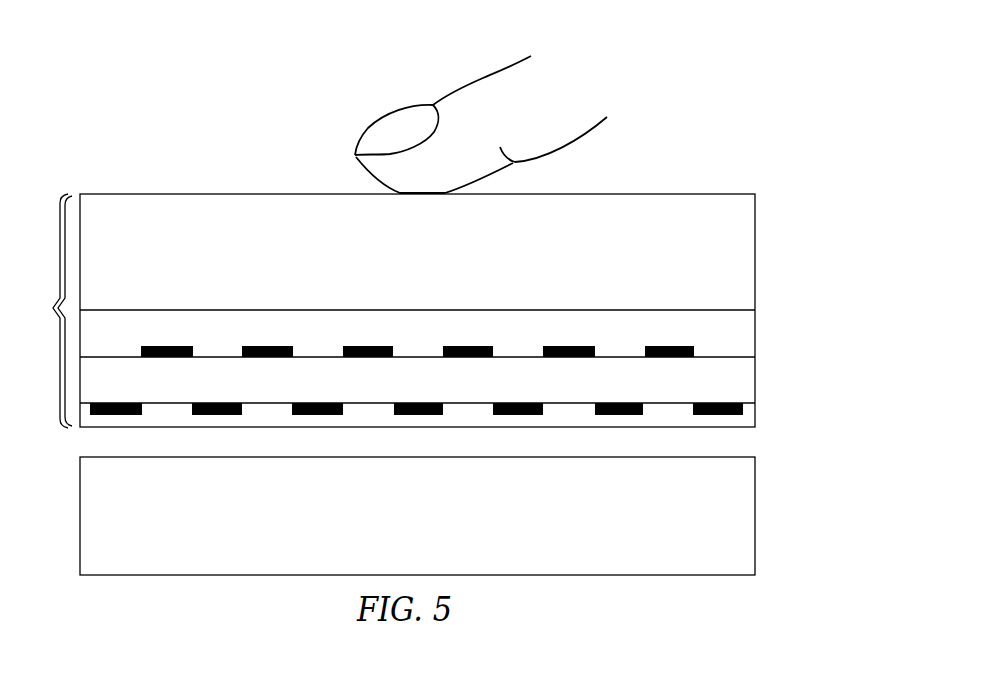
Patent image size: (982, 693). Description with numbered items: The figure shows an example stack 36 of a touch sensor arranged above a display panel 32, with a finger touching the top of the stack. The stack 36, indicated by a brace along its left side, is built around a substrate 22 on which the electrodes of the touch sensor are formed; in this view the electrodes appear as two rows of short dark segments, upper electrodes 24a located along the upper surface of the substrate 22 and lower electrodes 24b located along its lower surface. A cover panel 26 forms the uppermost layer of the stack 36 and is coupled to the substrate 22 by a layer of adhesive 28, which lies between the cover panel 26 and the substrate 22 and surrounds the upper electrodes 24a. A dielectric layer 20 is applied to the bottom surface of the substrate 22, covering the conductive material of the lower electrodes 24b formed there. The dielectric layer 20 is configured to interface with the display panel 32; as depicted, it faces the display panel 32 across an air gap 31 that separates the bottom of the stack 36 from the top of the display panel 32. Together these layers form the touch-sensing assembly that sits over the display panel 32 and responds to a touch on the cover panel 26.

The dielectric layer 20 is at (575, 415).
The substrate 22 is at (742, 382).
The electrodes 24a is at (670, 347).
The electrodes 24b is at (617, 415).
The cover panel 26 is at (742, 255).
The layer of adhesive 28 is at (742, 335).
The air gap 31 is at (743, 442).
The display panel 32 is at (742, 510).
The stack 36 is at (47, 311).